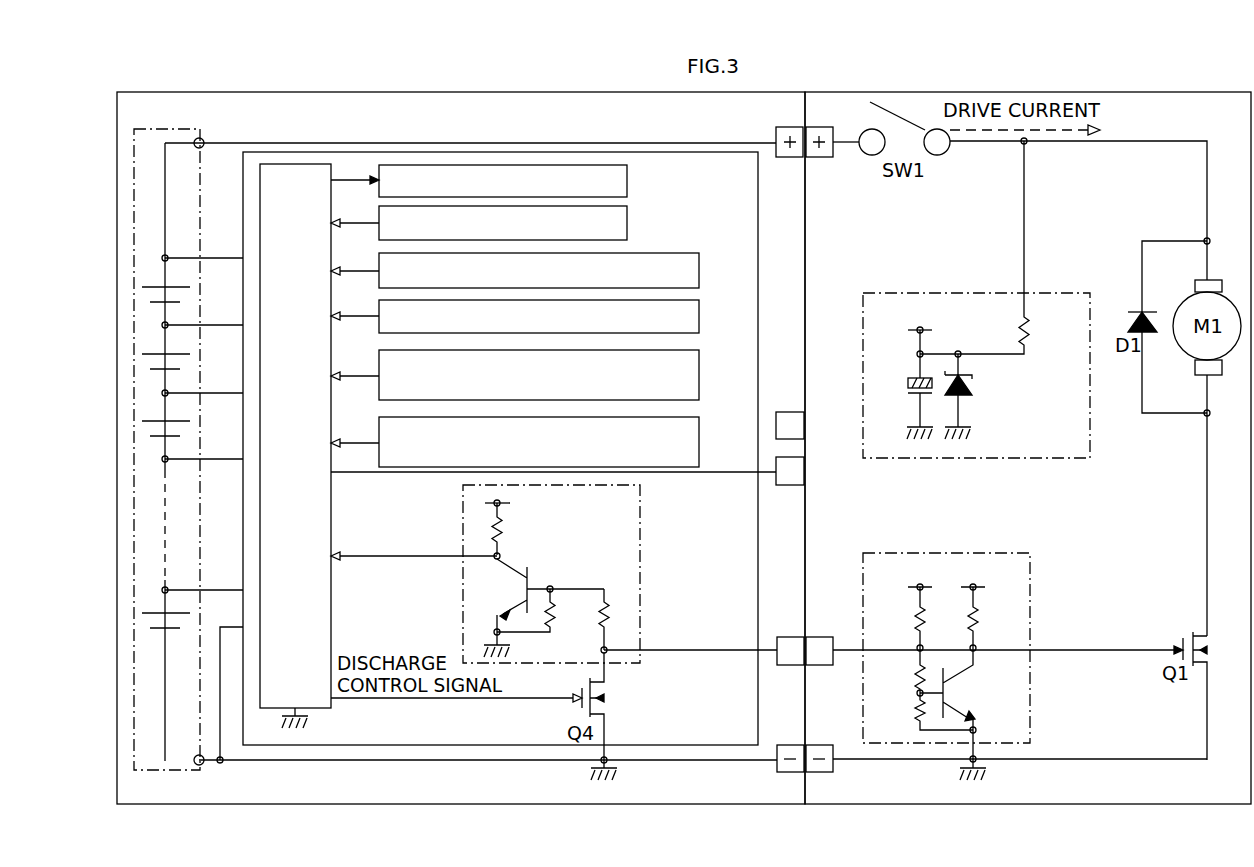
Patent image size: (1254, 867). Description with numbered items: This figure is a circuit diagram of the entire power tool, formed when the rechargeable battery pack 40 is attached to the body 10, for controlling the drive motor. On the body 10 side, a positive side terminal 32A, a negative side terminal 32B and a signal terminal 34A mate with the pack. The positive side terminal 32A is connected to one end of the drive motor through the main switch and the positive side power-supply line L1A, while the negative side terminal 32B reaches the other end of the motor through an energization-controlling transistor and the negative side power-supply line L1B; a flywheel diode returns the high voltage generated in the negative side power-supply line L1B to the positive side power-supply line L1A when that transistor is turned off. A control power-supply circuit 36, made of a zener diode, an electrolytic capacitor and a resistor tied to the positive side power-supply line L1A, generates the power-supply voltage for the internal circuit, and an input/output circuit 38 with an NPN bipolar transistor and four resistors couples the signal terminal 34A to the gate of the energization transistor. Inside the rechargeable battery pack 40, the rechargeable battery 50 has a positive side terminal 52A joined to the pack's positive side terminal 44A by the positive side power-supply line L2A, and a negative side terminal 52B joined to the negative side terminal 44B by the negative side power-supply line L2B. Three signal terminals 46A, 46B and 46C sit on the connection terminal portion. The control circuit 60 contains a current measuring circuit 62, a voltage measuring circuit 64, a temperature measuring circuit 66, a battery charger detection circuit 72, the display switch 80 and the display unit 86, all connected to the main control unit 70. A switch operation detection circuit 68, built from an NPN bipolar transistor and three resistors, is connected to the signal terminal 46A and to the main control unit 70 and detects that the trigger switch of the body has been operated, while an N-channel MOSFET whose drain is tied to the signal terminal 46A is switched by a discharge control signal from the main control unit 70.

The body 10 is at (1068, 92).
The rechargeable battery pack 40 is at (348, 92).
The rechargeable battery 50 is at (176, 130).
The positive side terminal of rechargeable battery 52A is at (201, 138).
The negative side terminal of rechargeable battery 52B is at (205, 765).
The control circuit 60 is at (336, 152).
The main control unit (MCU) 70 is at (283, 164).
The display unit 86 is at (631, 180).
The display switch 80 is at (631, 222).
The current measuring circuit 62 is at (703, 268).
The voltage measuring circuit 64 is at (703, 315).
The temperature measuring circuit 66 is at (703, 373).
The battery charger detection circuit 72 is at (703, 442).
The switch operation detection circuit 68 is at (640, 517).
The positive side terminal of rechargeable battery pack 44A is at (790, 127).
The positive side terminal of body 32A is at (813, 127).
The signal terminal 46C is at (786, 412).
The signal terminal 46B is at (784, 485).
The signal terminal 46A is at (788, 637).
The signal terminal of body 34A is at (824, 637).
The negative side terminal of rechargeable battery pack 44B is at (788, 745).
The negative side terminal of body 32B is at (824, 745).
The control power-supply circuit 36 is at (931, 292).
The input/output circuit 38 is at (931, 552).
The positive side power-supply line L1A is at (1137, 140).
The negative side power-supply line L1B is at (1207, 550).
The positive side power-supply line of battery pack L2A is at (580, 141).
The negative side power-supply line of battery pack L2B is at (546, 762).